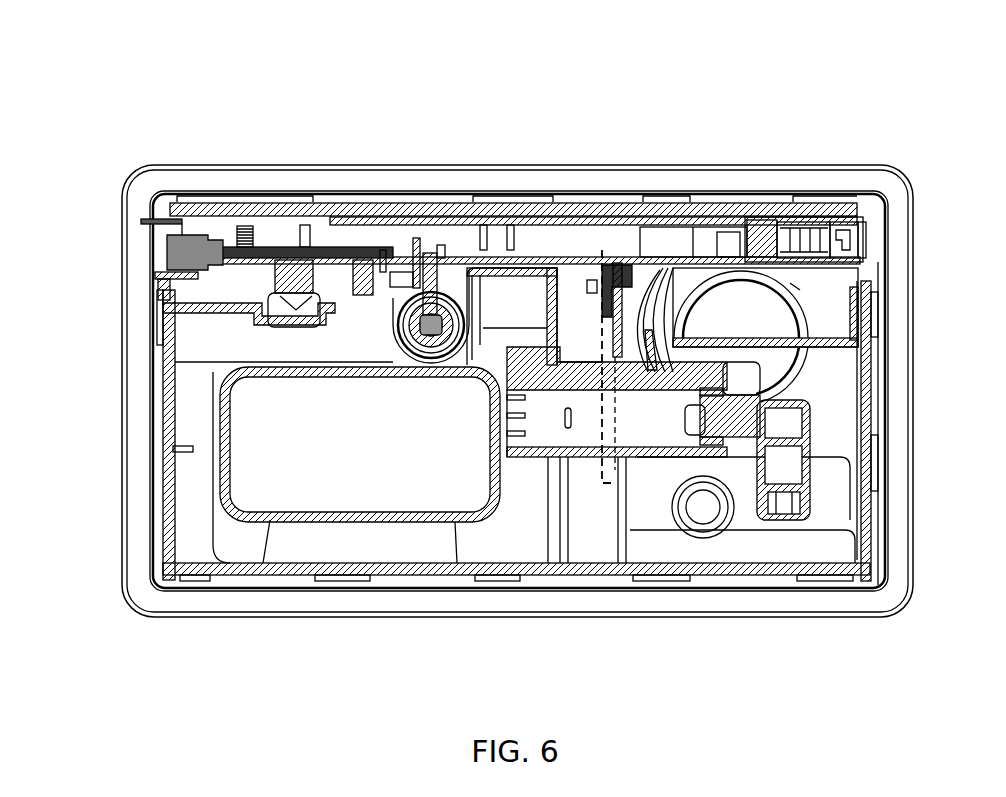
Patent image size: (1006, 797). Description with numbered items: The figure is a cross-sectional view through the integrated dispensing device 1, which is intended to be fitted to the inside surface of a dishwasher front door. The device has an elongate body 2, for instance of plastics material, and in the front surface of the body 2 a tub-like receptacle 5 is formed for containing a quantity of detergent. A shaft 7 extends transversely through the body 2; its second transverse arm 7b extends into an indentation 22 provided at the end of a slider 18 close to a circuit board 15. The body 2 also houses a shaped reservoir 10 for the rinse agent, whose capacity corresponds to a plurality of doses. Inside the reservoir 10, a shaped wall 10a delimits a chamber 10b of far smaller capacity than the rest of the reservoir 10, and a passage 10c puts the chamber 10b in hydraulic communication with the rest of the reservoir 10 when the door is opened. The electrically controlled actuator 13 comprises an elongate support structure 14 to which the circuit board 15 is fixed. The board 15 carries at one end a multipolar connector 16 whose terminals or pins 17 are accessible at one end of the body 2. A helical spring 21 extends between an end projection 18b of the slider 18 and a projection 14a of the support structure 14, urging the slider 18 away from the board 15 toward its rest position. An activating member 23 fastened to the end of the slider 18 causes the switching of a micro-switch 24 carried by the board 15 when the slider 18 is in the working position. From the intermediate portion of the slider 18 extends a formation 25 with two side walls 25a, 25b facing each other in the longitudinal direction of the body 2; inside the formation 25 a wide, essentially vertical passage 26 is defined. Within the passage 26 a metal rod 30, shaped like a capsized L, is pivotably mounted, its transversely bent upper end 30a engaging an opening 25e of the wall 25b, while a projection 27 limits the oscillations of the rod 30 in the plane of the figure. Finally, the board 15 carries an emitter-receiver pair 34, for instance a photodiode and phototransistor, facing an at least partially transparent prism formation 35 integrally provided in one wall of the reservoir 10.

The integrated dispensing device 1 is at (215, 155).
The elongate body 2 is at (733, 203).
The tub-like receptacle 5 is at (304, 461).
The shaft 7 is at (405, 378).
The second transverse arm of the shaft 7b is at (440, 262).
The reservoir 10 is at (181, 406).
The shaped wall 10a is at (262, 312).
The chamber 10b is at (258, 295).
The passage 10c is at (160, 292).
The electrically controlled actuator 13 is at (612, 208).
The support structure 14 is at (661, 222).
The projection of the support structure 14a is at (750, 253).
The circuit board 15 is at (272, 240).
The multipolar connector 16 is at (170, 252).
The terminals or pins 17 is at (148, 205).
The slider 18 is at (619, 255).
The end projection of the slider 18b is at (865, 227).
The helical spring 21 is at (803, 212).
The indentation 22 is at (429, 255).
The activating member 23 is at (403, 280).
The micro-switch 24 is at (370, 294).
The formation 25 is at (497, 396).
The side wall of the formation 25a is at (547, 322).
The side wall of the formation 25b is at (684, 322).
The opening 25e is at (612, 268).
The passage 26 is at (564, 319).
The projection 27 is at (589, 282).
The rod 30 is at (622, 292).
The upper end of the rod 30a is at (625, 288).
The emitter-receiver pair 34 is at (278, 284).
The prism formation 35 is at (294, 294).